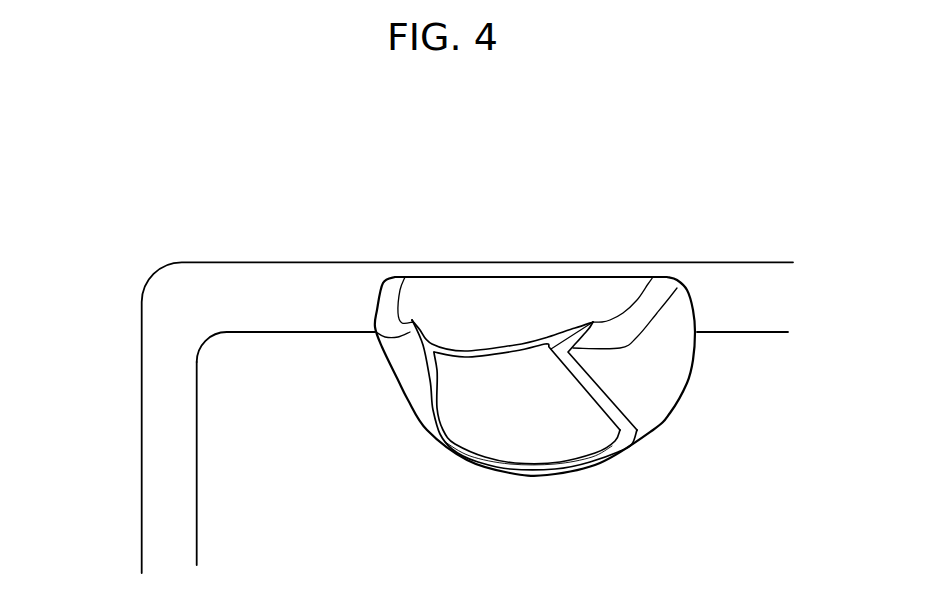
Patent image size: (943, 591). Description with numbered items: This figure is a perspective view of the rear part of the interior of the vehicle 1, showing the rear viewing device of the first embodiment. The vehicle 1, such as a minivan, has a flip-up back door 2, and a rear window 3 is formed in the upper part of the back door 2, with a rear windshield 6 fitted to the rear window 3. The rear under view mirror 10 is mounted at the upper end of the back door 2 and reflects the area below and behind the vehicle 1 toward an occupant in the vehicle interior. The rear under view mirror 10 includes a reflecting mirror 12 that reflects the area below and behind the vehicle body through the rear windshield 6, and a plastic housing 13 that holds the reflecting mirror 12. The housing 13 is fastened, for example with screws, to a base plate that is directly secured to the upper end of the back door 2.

The vehicle 1 is at (140, 186).
The back door 2 is at (728, 278).
The rear window 3 is at (197, 413).
The rear windshield 6 is at (245, 517).
The rear under view mirror 10 is at (513, 263).
The reflecting mirror 12 is at (488, 422).
The housing 13 is at (638, 305).